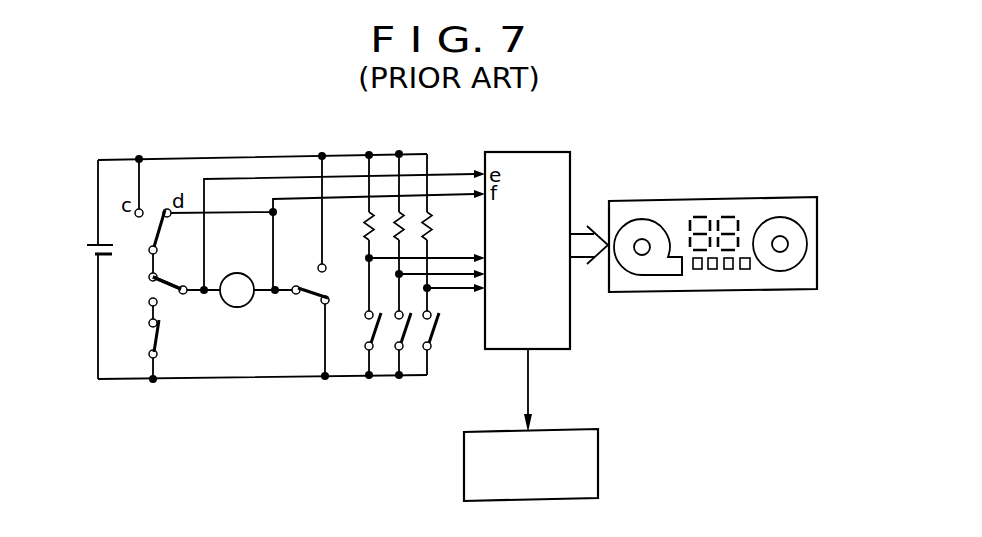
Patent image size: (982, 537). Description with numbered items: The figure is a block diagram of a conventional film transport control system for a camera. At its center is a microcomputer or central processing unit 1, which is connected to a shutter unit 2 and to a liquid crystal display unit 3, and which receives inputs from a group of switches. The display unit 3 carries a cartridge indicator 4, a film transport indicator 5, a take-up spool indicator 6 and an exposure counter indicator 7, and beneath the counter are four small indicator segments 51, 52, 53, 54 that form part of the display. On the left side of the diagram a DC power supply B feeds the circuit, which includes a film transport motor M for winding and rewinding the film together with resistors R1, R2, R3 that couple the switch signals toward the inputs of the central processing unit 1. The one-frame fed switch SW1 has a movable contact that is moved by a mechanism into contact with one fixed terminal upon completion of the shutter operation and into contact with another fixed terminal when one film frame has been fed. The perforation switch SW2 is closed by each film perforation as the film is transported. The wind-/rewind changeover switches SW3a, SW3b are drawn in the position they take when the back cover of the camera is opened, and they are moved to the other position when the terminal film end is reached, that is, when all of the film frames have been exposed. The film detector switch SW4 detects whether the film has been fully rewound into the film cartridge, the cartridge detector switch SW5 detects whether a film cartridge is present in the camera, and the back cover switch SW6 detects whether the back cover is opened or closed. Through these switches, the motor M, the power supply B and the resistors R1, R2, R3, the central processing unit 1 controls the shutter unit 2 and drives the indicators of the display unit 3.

The central processing unit 1 is at (530, 150).
The shutter unit 2 is at (599, 435).
The liquid crystal display unit 3 is at (657, 200).
The cartridge indicator 4 is at (637, 274).
The film transport indicator 5 is at (681, 281).
The take-up spool indicator 6 is at (803, 228).
The exposure counter indicator 7 is at (715, 215).
The indicator segment 51 is at (698, 272).
The indicator segment 52 is at (712, 272).
The indicator segment 53 is at (729, 272).
The indicator segment 54 is at (745, 272).
The DC power supply B is at (95, 258).
The film transport motor M is at (237, 290).
The one-frame fed switch SW1 is at (145, 228).
The perforation switch SW2 is at (370, 332).
The wind-/rewind changeover switch SW3a is at (167, 293).
The wind-/rewind changeover switch SW3b is at (313, 293).
The film detector switch SW4 is at (148, 338).
The cartridge detector switch SW5 is at (398, 333).
The back cover switch SW6 is at (441, 328).
The resistor R1 is at (365, 218).
The resistor R2 is at (405, 222).
The resistor R3 is at (428, 225).